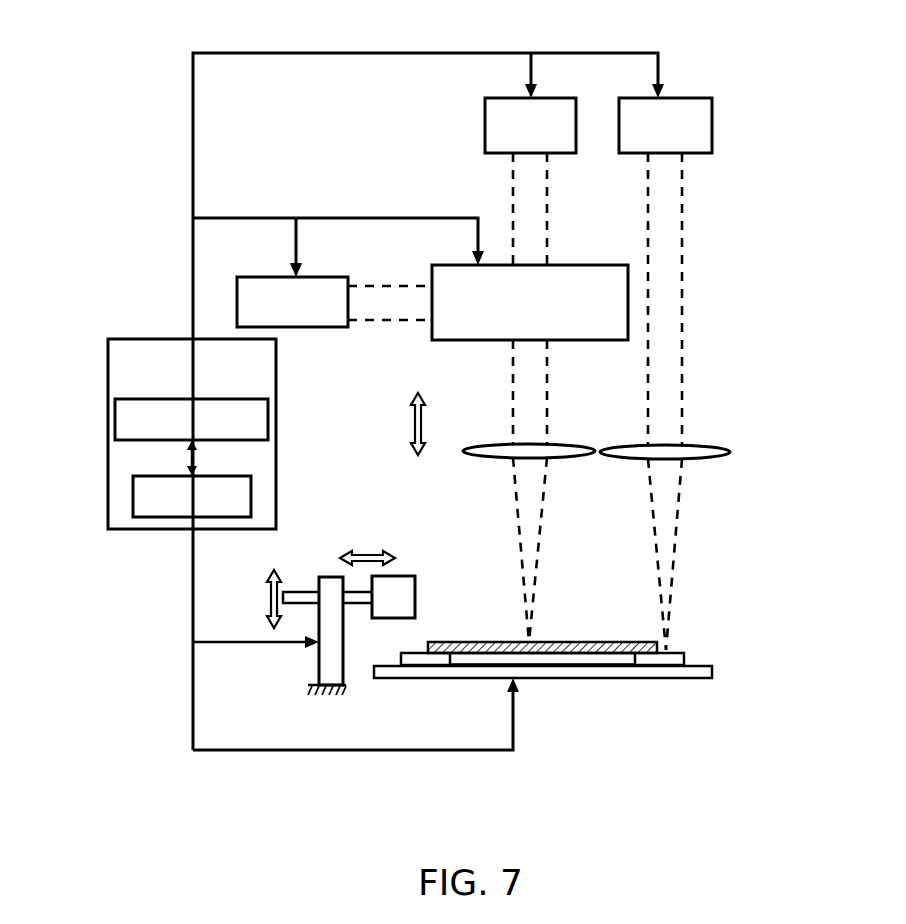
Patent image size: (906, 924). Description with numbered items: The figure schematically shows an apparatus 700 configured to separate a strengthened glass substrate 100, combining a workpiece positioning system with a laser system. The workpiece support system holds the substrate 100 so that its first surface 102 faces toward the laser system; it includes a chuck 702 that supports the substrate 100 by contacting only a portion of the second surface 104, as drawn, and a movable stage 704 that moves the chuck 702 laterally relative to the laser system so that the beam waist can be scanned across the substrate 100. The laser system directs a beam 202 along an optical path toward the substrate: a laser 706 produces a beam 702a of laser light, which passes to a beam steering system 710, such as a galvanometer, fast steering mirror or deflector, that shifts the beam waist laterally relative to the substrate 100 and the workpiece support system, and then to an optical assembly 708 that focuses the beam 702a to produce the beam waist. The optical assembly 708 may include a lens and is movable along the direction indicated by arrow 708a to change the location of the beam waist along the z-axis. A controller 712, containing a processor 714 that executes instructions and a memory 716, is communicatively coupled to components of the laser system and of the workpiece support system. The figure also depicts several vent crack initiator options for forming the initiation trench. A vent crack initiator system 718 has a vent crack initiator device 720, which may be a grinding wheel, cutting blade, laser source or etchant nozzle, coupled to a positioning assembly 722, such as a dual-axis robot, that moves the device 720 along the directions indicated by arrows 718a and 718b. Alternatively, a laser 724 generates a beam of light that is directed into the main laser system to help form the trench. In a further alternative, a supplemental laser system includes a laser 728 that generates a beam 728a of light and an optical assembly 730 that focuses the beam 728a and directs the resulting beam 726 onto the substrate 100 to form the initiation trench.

The apparatus 700 is at (178, 88).
The substrate 100 is at (637, 652).
The first surface 102 is at (632, 628).
The second surface 104 is at (607, 668).
The beam 202 is at (512, 495).
The chuck 702 is at (677, 653).
The beam of laser light 702a is at (364, 285).
The movable stage 704 is at (712, 665).
The laser 706 is at (318, 277).
The optical assembly 708 is at (494, 444).
The arrow 708a is at (392, 424).
The beam steering system 710 is at (476, 260).
The controller 712 is at (159, 418).
The processor 714 is at (118, 399).
The memory 716 is at (135, 476).
The vent crack initiator system 718 is at (293, 562).
The arrow 718a is at (367, 546).
The arrow 718b is at (293, 599).
The vent crack initiator device 720 is at (395, 576).
The positioning assembly 722 is at (333, 678).
The laser 724 is at (507, 97).
The beam of laser light 726 is at (680, 510).
The laser 728 is at (640, 97).
The beam of light 728a is at (683, 272).
The optical assembly 730 is at (700, 445).